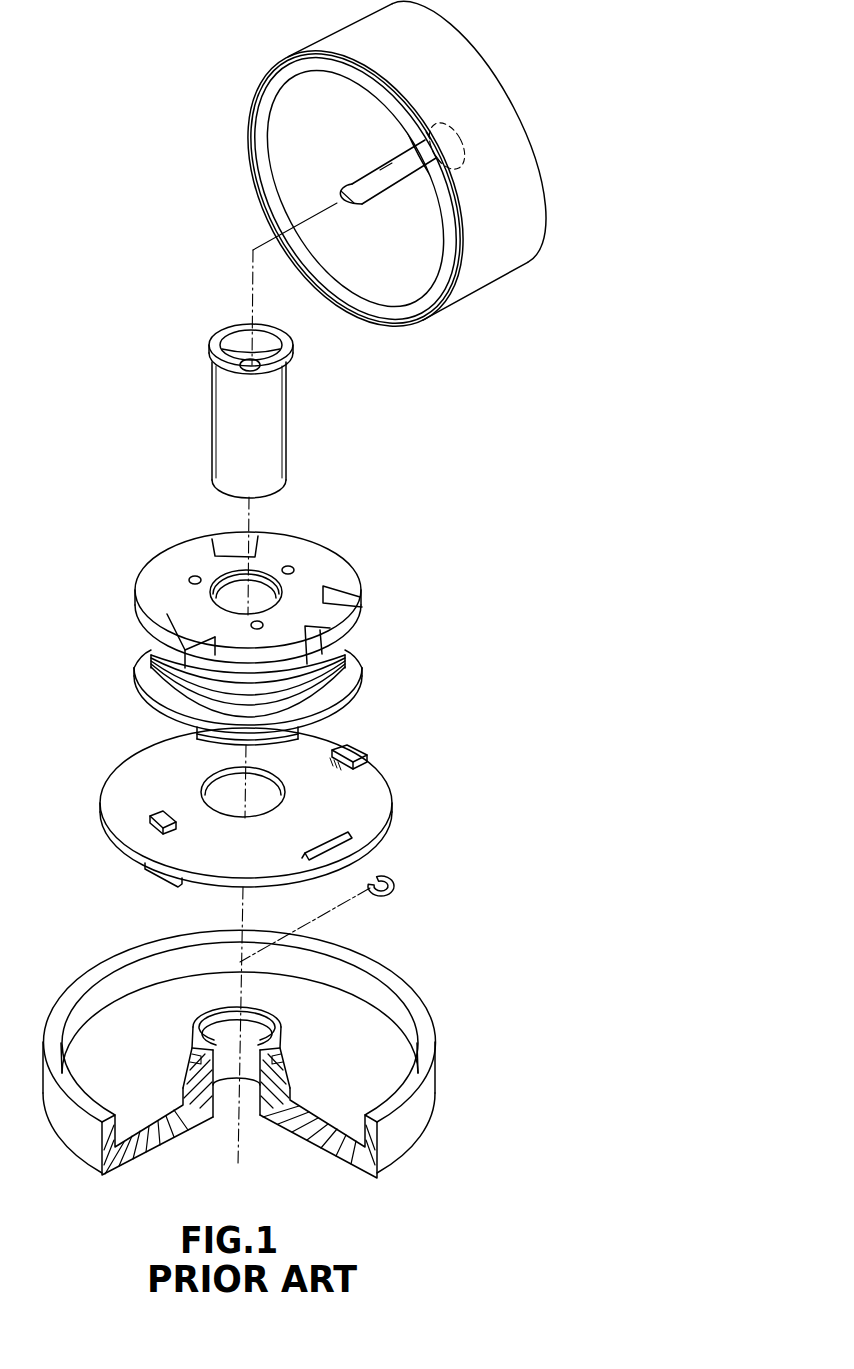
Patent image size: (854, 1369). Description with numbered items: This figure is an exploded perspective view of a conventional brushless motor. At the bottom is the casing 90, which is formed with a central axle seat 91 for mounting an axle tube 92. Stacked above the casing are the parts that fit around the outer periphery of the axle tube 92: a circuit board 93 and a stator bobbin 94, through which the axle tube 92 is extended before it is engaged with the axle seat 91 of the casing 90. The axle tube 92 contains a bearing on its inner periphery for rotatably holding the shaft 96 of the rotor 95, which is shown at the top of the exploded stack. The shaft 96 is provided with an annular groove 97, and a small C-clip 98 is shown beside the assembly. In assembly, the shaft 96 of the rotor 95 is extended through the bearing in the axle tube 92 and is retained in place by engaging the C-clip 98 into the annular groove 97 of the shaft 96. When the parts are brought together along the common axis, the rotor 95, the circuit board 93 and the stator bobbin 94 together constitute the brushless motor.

The casing 90 is at (423, 1027).
The axle seat 91 is at (277, 1028).
The axle tube 92 is at (273, 408).
The circuit board 93 is at (373, 783).
The stator bobbin 94 is at (320, 602).
The rotor 95 is at (485, 265).
The shaft 96 is at (385, 176).
The annular groove 97 is at (348, 196).
The C-clip 98 is at (388, 882).